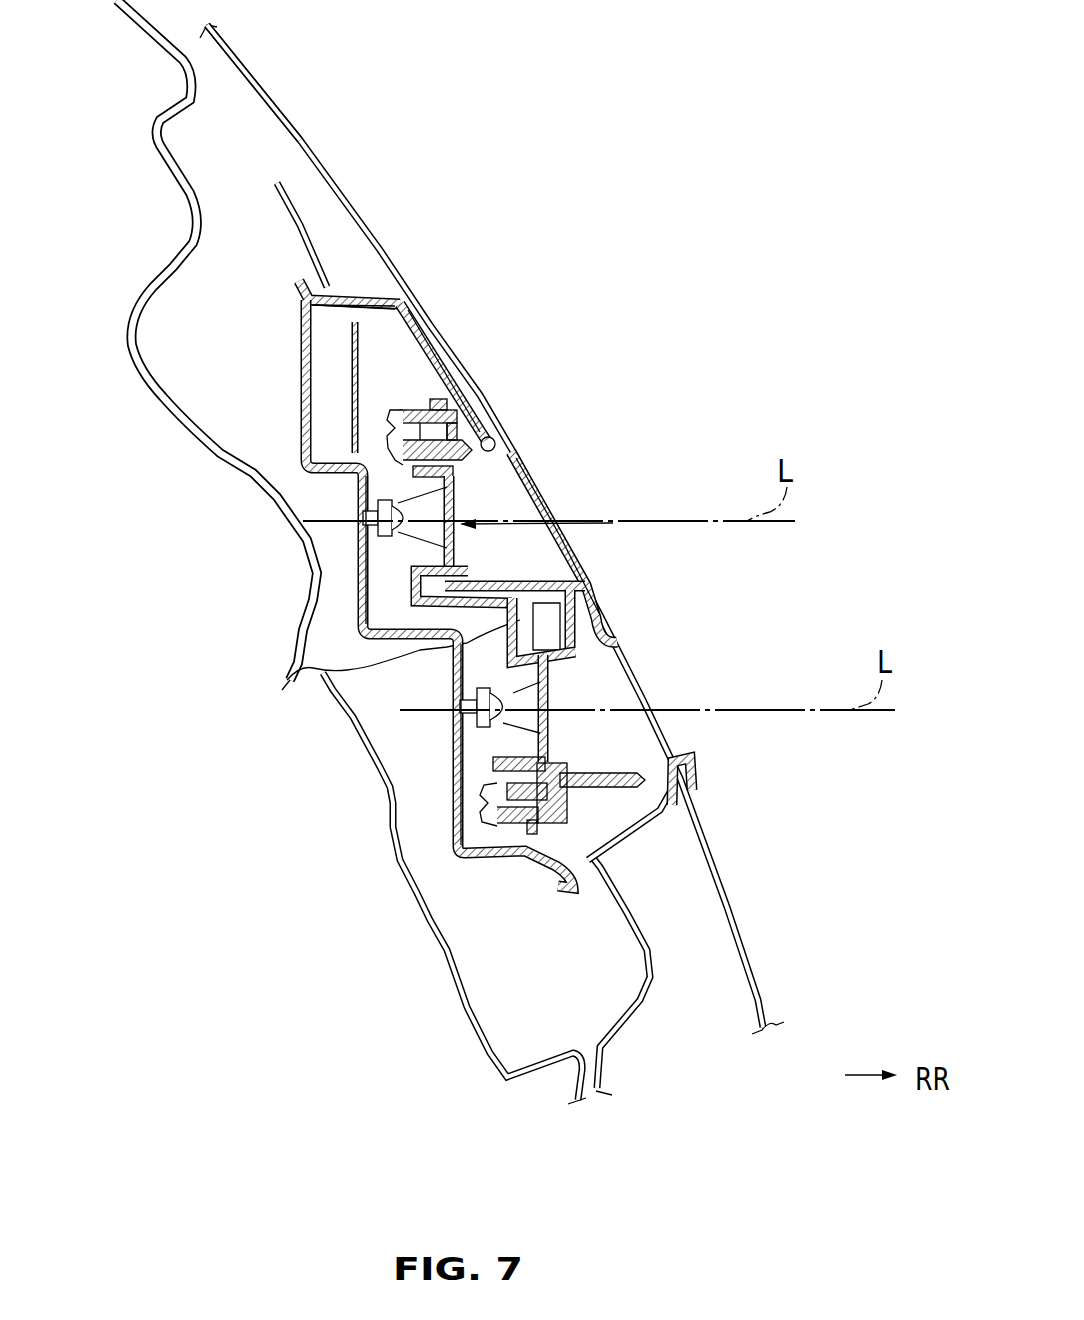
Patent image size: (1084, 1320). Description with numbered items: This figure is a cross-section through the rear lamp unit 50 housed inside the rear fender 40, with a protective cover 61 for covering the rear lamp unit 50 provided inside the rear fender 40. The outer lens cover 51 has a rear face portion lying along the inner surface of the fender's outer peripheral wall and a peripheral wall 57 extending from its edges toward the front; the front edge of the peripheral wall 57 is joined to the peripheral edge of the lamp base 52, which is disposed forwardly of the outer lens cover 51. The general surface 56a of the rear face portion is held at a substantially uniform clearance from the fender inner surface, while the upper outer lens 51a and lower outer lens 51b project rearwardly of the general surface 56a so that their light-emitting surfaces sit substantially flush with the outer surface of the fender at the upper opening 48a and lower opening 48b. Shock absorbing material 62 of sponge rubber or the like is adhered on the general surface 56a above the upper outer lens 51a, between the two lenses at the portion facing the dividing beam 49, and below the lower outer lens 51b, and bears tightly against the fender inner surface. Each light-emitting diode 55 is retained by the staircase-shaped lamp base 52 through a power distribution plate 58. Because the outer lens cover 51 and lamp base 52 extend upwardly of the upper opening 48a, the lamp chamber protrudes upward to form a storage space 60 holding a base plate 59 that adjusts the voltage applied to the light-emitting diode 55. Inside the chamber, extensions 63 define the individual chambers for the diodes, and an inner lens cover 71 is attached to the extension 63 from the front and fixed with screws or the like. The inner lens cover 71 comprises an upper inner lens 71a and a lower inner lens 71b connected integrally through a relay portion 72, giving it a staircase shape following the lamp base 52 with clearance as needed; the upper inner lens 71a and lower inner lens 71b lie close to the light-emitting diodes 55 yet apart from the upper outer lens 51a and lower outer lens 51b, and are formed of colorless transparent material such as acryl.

The rear fender 40 is at (267, 93).
The upper opening 48a is at (515, 446).
The lower opening 48b is at (627, 640).
The dividing beam 49 is at (643, 582).
The rear lamp unit 50 is at (596, 442).
The outer lens cover 51 is at (443, 338).
The upper outer lens 51a is at (527, 478).
The lower outer lens 51b is at (630, 665).
The lamp base 52 is at (293, 367).
The light-emitting diode 55 is at (440, 505).
The general surface 56a is at (440, 400).
The peripheral wall 57 is at (357, 300).
The power distribution plate 58 is at (377, 637).
The base plate 59 is at (362, 392).
The storage space 60 is at (387, 326).
The protective cover 61 is at (167, 257).
The shock absorbing material 62 is at (487, 437).
The extension 63 is at (556, 843).
The inner lens cover 71 is at (478, 524).
The upper inner lens 71a is at (457, 548).
The lower inner lens 71b is at (553, 738).
The relay portion 72 is at (590, 598).